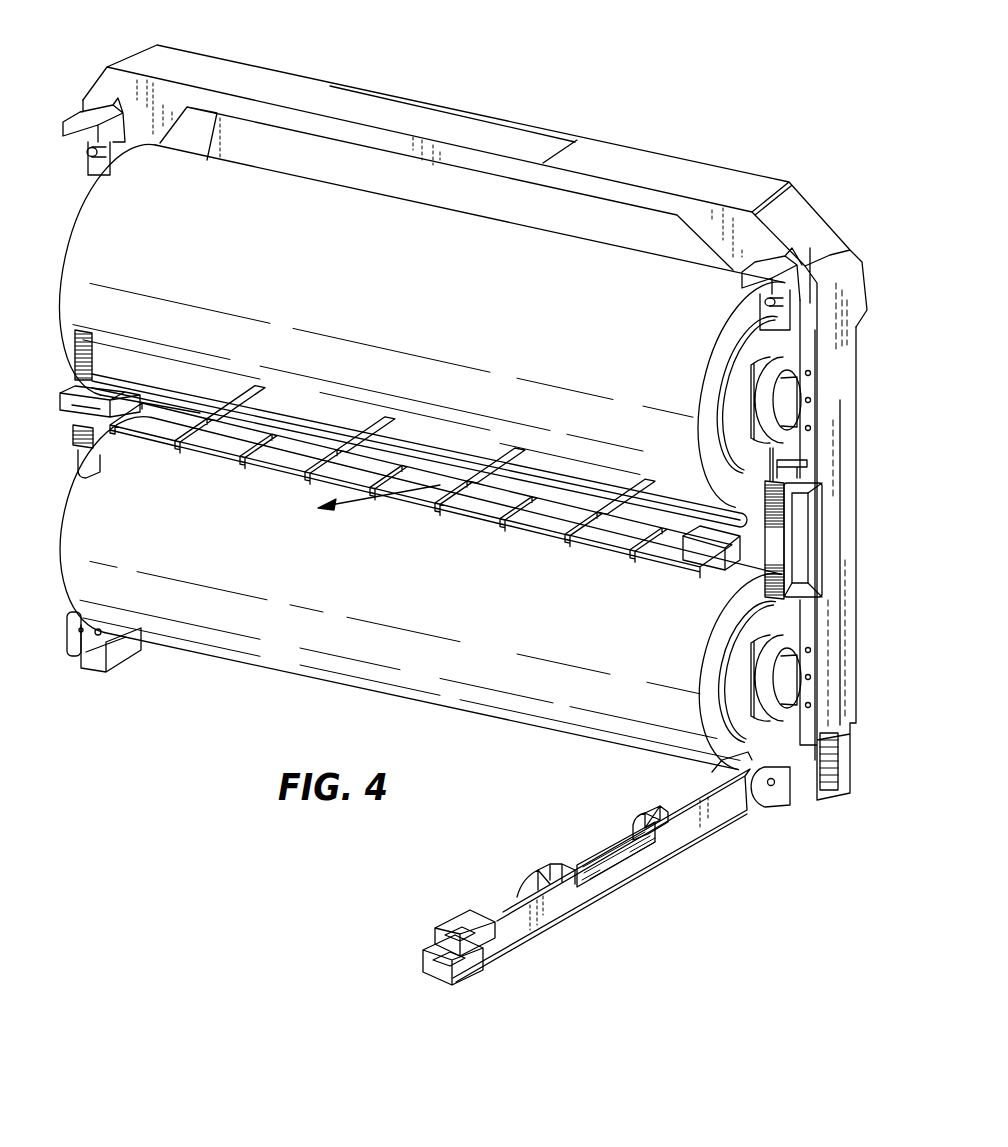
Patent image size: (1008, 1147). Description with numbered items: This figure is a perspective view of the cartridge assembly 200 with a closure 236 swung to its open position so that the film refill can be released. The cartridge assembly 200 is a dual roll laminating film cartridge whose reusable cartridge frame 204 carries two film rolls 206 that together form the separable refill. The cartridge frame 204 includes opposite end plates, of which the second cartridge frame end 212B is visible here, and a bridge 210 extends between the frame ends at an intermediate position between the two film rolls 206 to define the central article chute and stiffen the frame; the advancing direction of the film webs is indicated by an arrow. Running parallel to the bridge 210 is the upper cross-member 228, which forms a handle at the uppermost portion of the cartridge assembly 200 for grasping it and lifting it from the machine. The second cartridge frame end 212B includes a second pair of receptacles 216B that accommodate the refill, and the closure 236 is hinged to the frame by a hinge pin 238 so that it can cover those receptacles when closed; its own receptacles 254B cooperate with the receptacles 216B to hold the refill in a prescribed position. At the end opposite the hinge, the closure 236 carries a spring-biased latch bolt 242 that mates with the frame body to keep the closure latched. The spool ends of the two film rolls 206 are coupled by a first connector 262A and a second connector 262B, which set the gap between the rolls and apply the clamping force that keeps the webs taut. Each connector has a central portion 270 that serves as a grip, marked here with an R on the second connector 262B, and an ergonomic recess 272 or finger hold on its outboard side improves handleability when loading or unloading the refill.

The cartridge assembly 200 is at (774, 156).
The cartridge frame 204 is at (90, 84).
The film roll 206 is at (110, 250).
The bridge 210 is at (97, 413).
The second cartridge frame end 212B is at (843, 403).
The second pair of receptacles 216B is at (780, 403).
The upper cross-member 228 is at (265, 78).
The closure 236 is at (570, 903).
The hinge pin 238 is at (773, 786).
The latch bolt 242 is at (430, 965).
The closure receptacle 254B is at (687, 805).
The first connector 262A is at (77, 353).
The second connector 262B is at (813, 498).
The central portion 270 is at (466, 438).
The ergonomic recess 272 is at (798, 572).